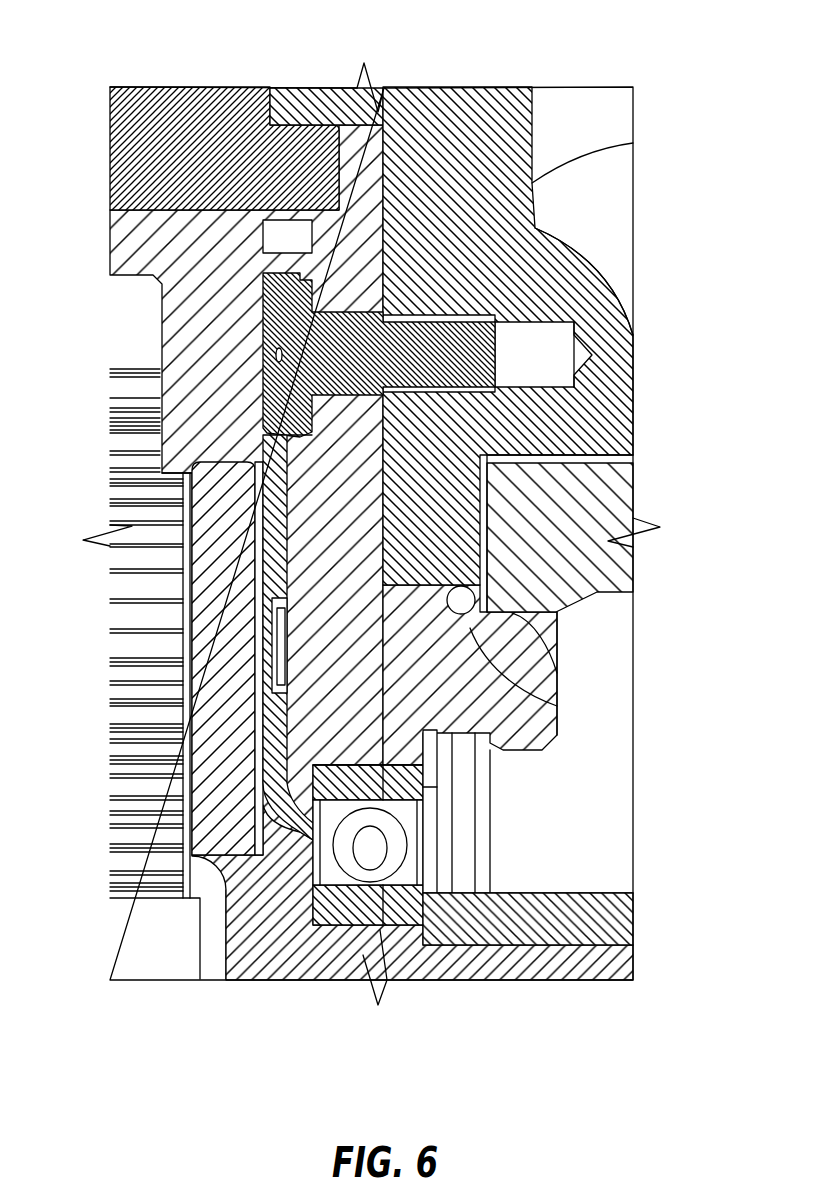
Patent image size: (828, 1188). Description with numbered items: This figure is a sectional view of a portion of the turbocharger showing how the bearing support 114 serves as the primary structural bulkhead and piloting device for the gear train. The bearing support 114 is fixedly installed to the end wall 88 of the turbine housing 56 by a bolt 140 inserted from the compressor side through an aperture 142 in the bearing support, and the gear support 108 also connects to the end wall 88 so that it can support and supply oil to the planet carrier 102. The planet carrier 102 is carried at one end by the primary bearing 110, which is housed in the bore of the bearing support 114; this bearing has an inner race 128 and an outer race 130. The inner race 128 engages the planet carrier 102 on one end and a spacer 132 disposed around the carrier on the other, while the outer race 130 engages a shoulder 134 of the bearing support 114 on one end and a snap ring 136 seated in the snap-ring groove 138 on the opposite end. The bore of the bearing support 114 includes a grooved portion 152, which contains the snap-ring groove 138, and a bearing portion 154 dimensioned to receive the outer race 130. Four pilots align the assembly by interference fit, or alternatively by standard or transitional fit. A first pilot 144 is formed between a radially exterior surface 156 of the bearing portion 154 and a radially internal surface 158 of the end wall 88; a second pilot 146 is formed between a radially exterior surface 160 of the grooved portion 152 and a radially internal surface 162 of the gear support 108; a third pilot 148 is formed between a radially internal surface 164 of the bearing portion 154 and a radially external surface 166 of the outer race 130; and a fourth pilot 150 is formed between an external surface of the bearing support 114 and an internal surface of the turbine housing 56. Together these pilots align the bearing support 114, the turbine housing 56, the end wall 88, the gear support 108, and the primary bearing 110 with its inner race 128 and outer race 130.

The turbine housing 56 is at (177, 100).
The end wall 88 is at (610, 333).
The planet carrier 102 is at (588, 960).
The gear support 108 is at (612, 563).
The primary bearing 110 is at (230, 890).
The bearing support 114 is at (310, 482).
The inner race 128 is at (322, 922).
The outer race 130 is at (372, 847).
The spacer 132 is at (597, 920).
The shoulder 134 is at (305, 795).
The snap ring 136 is at (430, 768).
The snap-ring groove 138 is at (428, 893).
The bolt 140 is at (463, 325).
The aperture 142 is at (340, 300).
The first pilot 144 is at (380, 556).
The second pilot 146 is at (557, 640).
The third pilot 148 is at (313, 215).
The fourth pilot 150 is at (382, 925).
The grooved portion 152 is at (522, 821).
The bearing portion 154 is at (345, 786).
The radially exterior surface 156 is at (557, 706).
The radially internal surface 158 is at (487, 583).
The radially exterior surface 160 is at (557, 673).
The radially internal surface 162 is at (520, 612).
The radially internal surface 164 is at (322, 752).
The radially external surface 166 is at (320, 797).